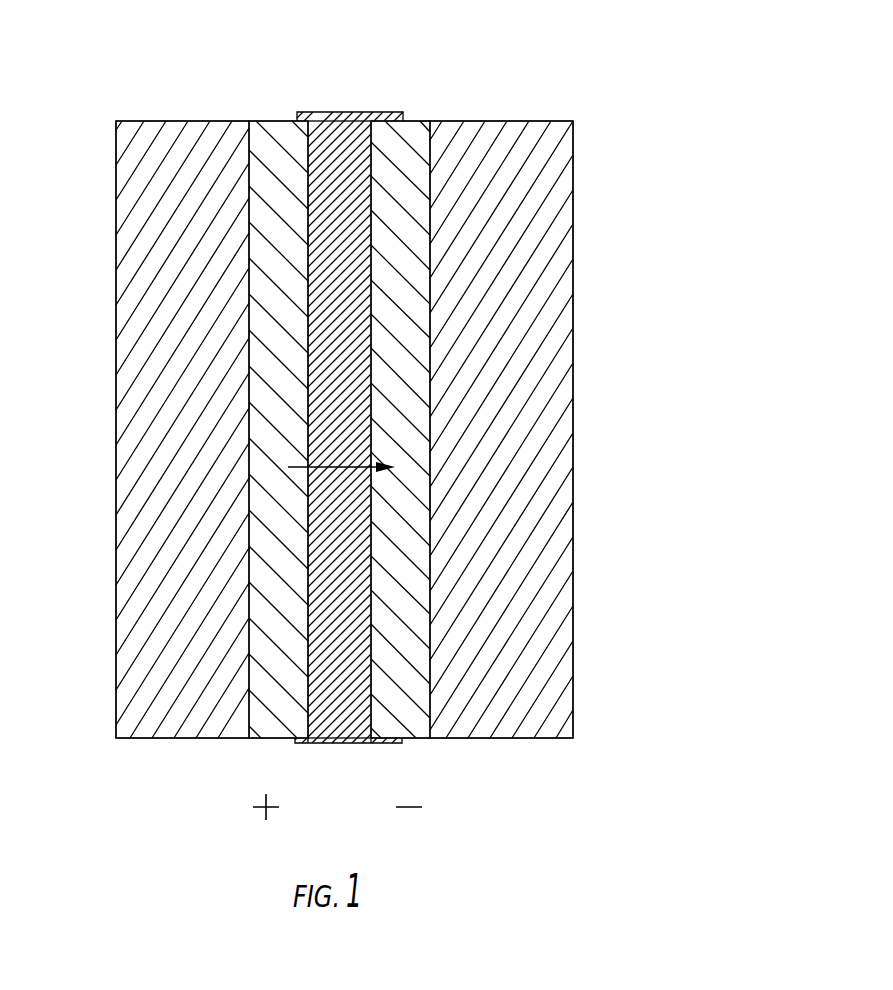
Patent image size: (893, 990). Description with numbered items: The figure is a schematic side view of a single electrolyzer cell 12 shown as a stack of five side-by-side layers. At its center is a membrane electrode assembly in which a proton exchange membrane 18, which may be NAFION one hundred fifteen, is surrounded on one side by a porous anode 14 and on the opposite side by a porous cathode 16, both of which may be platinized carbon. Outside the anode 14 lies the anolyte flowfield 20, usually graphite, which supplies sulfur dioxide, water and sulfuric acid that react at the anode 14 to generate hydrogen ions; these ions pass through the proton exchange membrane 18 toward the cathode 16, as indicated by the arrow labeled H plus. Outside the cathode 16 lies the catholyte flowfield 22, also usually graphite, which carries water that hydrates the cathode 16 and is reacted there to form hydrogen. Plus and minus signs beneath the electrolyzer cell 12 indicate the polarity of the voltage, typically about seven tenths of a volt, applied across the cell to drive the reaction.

The electrolyzer cell 12 is at (698, 226).
The porous anode 14 is at (278, 569).
The porous cathode 16 is at (400, 592).
The proton exchange membrane 18 is at (348, 720).
The anolyte flowfield 20 is at (185, 326).
The catholyte flowfield 22 is at (513, 412).